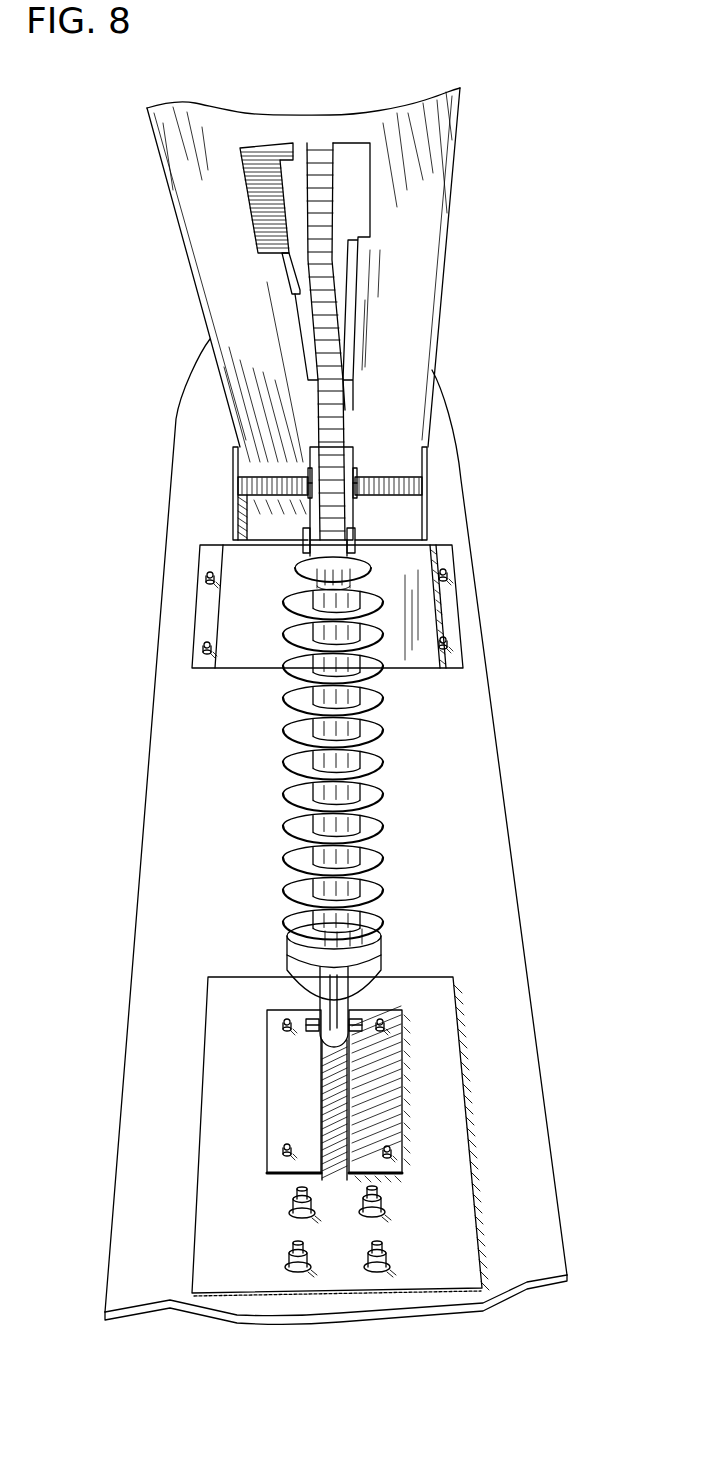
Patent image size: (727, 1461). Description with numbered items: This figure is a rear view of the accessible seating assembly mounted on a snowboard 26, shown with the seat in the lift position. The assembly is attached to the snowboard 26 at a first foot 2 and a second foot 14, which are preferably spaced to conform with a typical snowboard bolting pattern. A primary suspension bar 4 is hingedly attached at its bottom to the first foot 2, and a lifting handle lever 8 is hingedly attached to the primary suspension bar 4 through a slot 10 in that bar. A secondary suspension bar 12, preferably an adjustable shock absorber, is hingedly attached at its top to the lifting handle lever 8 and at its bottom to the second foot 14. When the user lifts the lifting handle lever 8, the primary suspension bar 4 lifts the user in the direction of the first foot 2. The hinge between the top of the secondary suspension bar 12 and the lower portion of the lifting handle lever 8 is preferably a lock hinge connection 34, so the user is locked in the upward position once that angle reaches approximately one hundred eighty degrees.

The first foot 2 is at (247, 601).
The primary suspension bar 4 is at (420, 303).
The lifting handle lever 8 is at (323, 243).
The slot 10 is at (295, 182).
The secondary suspension bar 12 is at (350, 730).
The second foot 14 is at (387, 1123).
The snowboard 26 is at (447, 882).
The lock hinge connection 34 is at (328, 533).